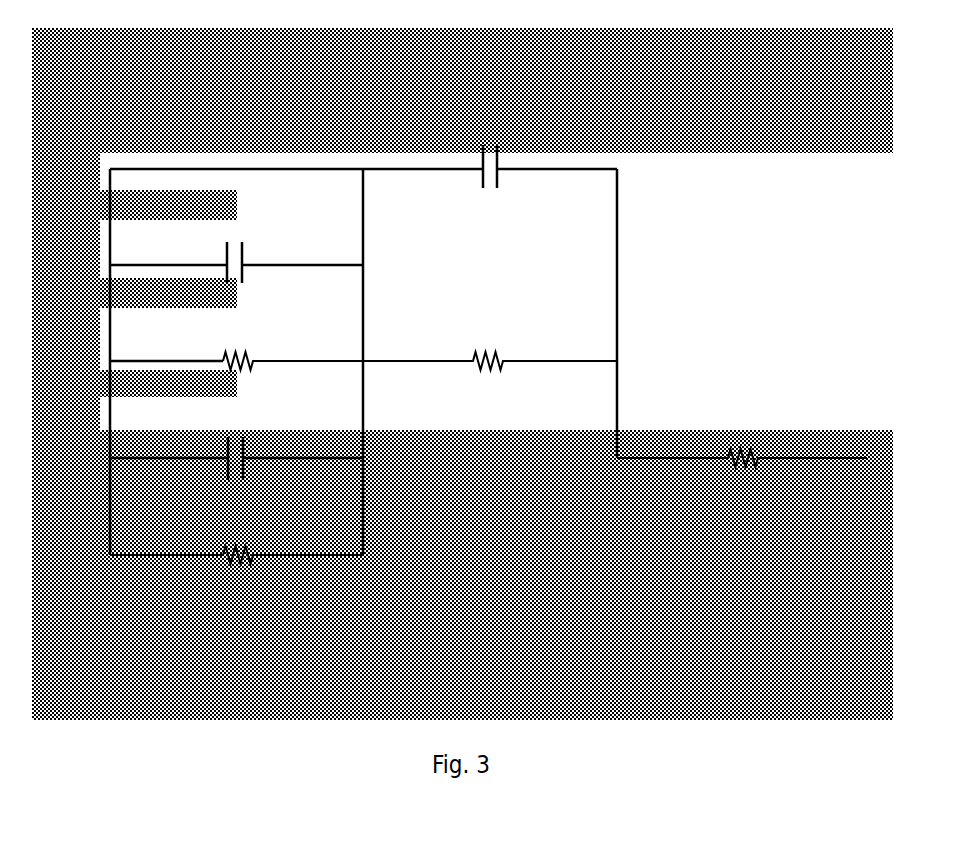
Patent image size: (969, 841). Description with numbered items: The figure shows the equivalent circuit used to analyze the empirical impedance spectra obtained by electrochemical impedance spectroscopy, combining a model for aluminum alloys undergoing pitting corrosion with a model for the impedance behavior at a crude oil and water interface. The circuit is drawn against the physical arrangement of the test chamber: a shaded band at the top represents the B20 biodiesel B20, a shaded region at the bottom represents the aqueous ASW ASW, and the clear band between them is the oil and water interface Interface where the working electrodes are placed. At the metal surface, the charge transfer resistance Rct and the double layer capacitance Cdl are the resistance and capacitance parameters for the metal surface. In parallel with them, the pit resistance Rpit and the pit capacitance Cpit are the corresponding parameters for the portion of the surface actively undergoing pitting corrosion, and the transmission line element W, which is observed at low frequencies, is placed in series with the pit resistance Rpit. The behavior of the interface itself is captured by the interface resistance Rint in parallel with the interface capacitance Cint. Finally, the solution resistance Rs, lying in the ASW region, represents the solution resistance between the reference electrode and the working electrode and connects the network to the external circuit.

The B20 biodiesel B20 is at (462, 90).
The element ASW is at (462, 436).
The oil and water interface Interface is at (565, 291).
The interface capacitance Cint is at (486, 191).
The pit capacitance Cpit is at (236, 286).
The transmission line element W is at (166, 361).
The pit resistance Rpit is at (279, 390).
The interface resistance Rint is at (490, 387).
The double layer capacitance Cdl is at (236, 480).
The charge transfer resistance Rct is at (236, 581).
The solution resistance Rs is at (742, 484).